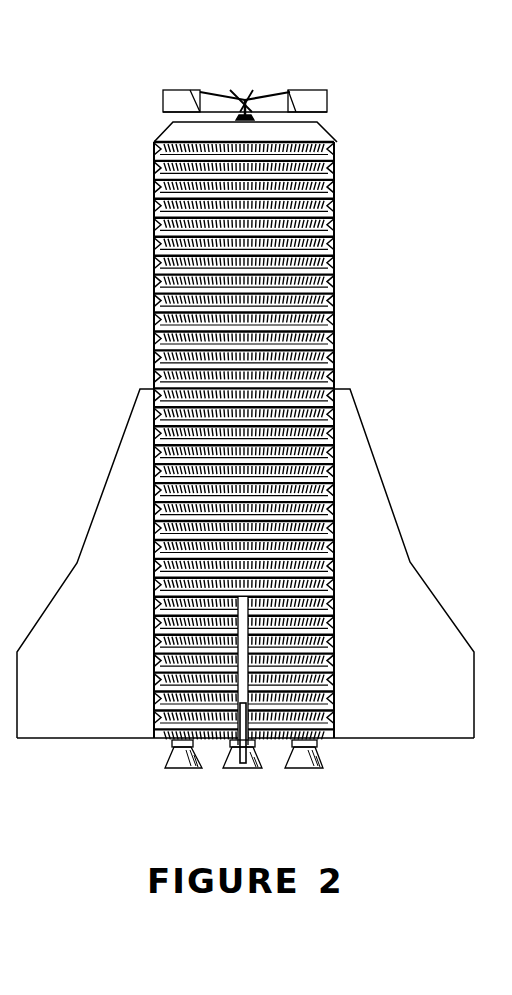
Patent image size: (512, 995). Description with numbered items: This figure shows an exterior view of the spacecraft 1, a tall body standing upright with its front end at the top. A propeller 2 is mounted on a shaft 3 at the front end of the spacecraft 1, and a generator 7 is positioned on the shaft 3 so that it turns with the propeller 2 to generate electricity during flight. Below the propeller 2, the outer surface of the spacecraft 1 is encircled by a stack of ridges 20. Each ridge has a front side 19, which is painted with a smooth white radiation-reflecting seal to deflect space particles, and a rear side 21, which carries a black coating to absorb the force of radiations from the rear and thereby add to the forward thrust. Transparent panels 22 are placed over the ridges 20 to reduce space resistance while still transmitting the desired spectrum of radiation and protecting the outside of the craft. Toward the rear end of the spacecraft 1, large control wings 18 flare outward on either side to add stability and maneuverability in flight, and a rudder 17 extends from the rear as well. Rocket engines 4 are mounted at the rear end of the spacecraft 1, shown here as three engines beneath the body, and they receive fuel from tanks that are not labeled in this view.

The spacecraft 1 is at (372, 187).
The propeller 2 is at (172, 97).
The shaft 3 is at (245, 100).
The generator 7 is at (232, 116).
The front side 19 is at (330, 131).
The ridges 20 is at (143, 216).
The rear side 21 is at (155, 302).
The transparent panels 22 is at (153, 362).
The control wings 18 is at (75, 615).
The rocket engines 4 is at (174, 768).
The rudder 17 is at (250, 747).